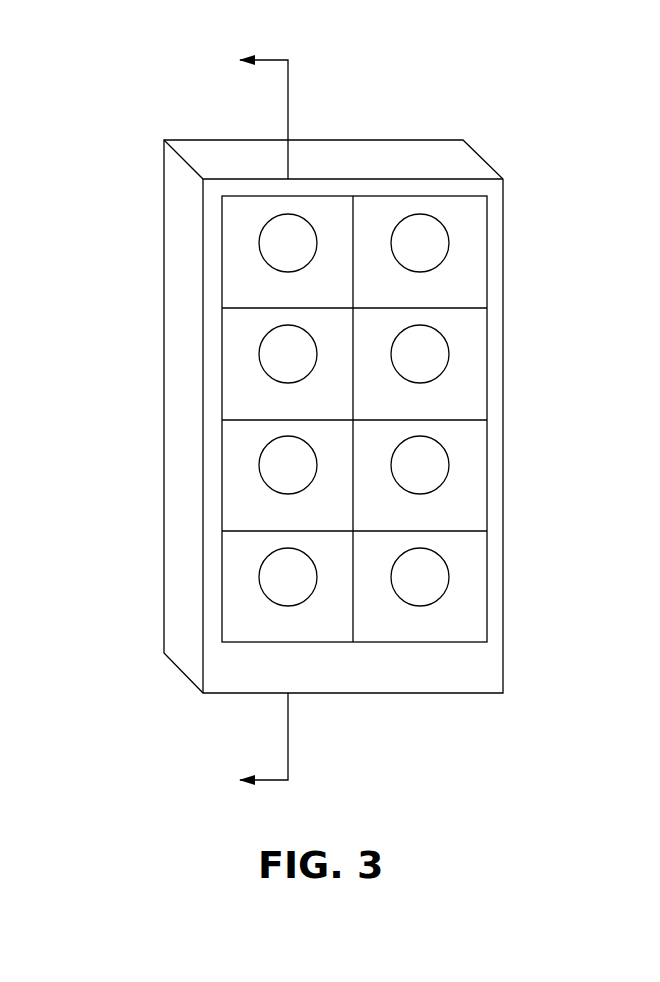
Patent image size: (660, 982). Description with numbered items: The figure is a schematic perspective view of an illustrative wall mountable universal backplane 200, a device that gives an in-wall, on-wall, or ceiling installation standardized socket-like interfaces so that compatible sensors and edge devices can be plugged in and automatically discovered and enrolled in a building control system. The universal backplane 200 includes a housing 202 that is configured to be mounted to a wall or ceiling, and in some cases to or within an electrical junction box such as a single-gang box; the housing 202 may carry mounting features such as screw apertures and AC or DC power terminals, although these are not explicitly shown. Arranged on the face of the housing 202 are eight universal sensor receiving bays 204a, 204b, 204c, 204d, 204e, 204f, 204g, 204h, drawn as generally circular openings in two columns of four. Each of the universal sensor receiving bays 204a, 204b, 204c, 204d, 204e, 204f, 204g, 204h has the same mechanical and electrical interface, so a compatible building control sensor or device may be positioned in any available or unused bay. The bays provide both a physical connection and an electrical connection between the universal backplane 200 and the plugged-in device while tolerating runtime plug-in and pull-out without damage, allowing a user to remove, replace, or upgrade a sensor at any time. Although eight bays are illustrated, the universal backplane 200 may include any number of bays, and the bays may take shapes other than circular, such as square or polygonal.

The wall mountable universal backplane 200 is at (470, 90).
The housing 202 is at (191, 150).
The universal sensor receiving bay 204a is at (259, 243).
The universal sensor receiving bay 204b is at (259, 354).
The universal sensor receiving bay 204c is at (259, 465).
The universal sensor receiving bay 204d is at (259, 577).
The universal sensor receiving bay 204e is at (449, 243).
The universal sensor receiving bay 204f is at (449, 354).
The universal sensor receiving bay 204g is at (449, 465).
The universal sensor receiving bay 204h is at (449, 577).